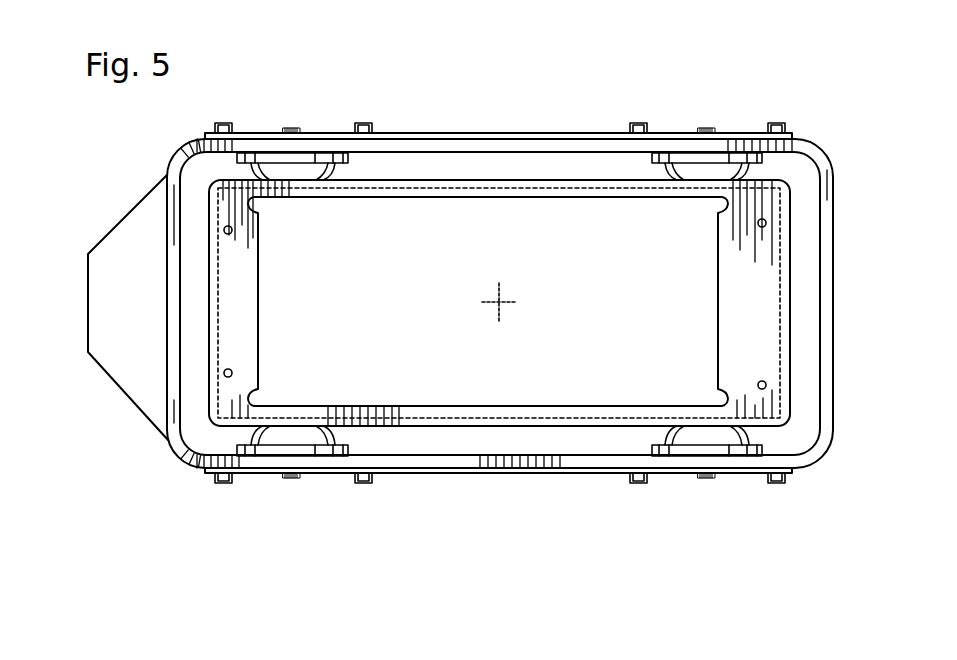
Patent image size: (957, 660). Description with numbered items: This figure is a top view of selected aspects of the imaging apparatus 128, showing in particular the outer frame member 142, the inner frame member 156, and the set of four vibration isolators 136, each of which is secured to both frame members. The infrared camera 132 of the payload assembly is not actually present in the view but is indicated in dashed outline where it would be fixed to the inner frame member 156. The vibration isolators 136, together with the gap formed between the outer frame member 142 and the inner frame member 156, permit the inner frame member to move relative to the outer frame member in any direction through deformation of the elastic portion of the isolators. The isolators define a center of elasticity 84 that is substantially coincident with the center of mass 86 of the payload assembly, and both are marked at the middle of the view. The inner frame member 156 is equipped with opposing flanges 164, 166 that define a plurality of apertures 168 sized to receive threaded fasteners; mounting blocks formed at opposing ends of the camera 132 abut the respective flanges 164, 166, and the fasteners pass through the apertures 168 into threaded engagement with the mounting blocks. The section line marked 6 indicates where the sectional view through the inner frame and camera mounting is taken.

The imaging apparatus 128 is at (290, 88).
The outer frame member 142 is at (449, 135).
The vibration isolators 136 is at (336, 126).
The inner frame member 156 is at (490, 180).
The flange 164 is at (208, 394).
The infrared camera 132 is at (210, 346).
The flange 166 is at (718, 320).
The apertures 168 is at (232, 233).
The center of elasticity 84 is at (497, 301).
The center of mass 86 is at (501, 301).
The section line 6 is at (218, 303).